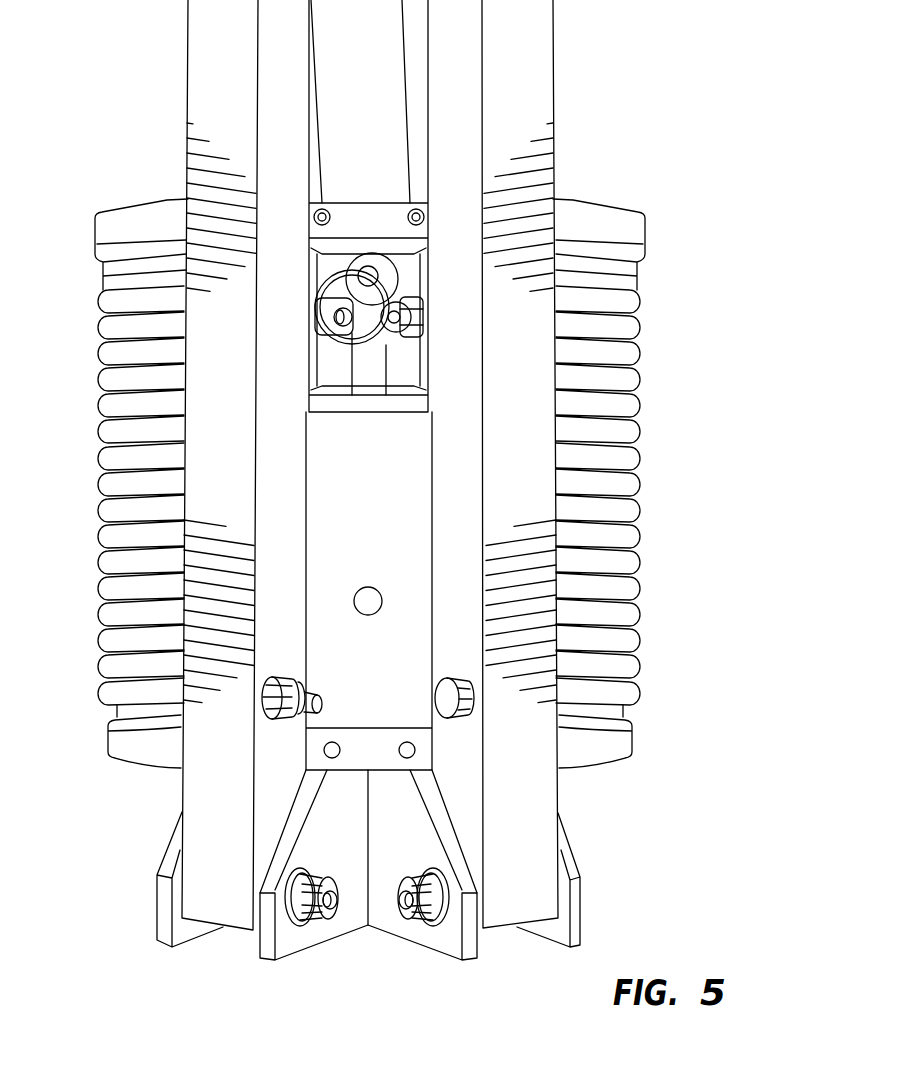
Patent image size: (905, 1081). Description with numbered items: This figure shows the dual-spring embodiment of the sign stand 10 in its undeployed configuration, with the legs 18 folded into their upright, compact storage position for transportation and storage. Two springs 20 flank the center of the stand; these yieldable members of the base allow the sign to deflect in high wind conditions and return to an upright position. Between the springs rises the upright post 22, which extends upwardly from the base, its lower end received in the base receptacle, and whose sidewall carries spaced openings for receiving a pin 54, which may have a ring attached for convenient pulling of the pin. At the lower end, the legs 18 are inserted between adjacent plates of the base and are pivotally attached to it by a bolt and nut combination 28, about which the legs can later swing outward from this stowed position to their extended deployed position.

The stand 10 is at (696, 494).
The legs 18 is at (218, 805).
The springs 20 is at (594, 589).
The upright post 22 is at (370, 135).
The bolt and nut combination 28 is at (332, 903).
The pin 54 is at (378, 273).